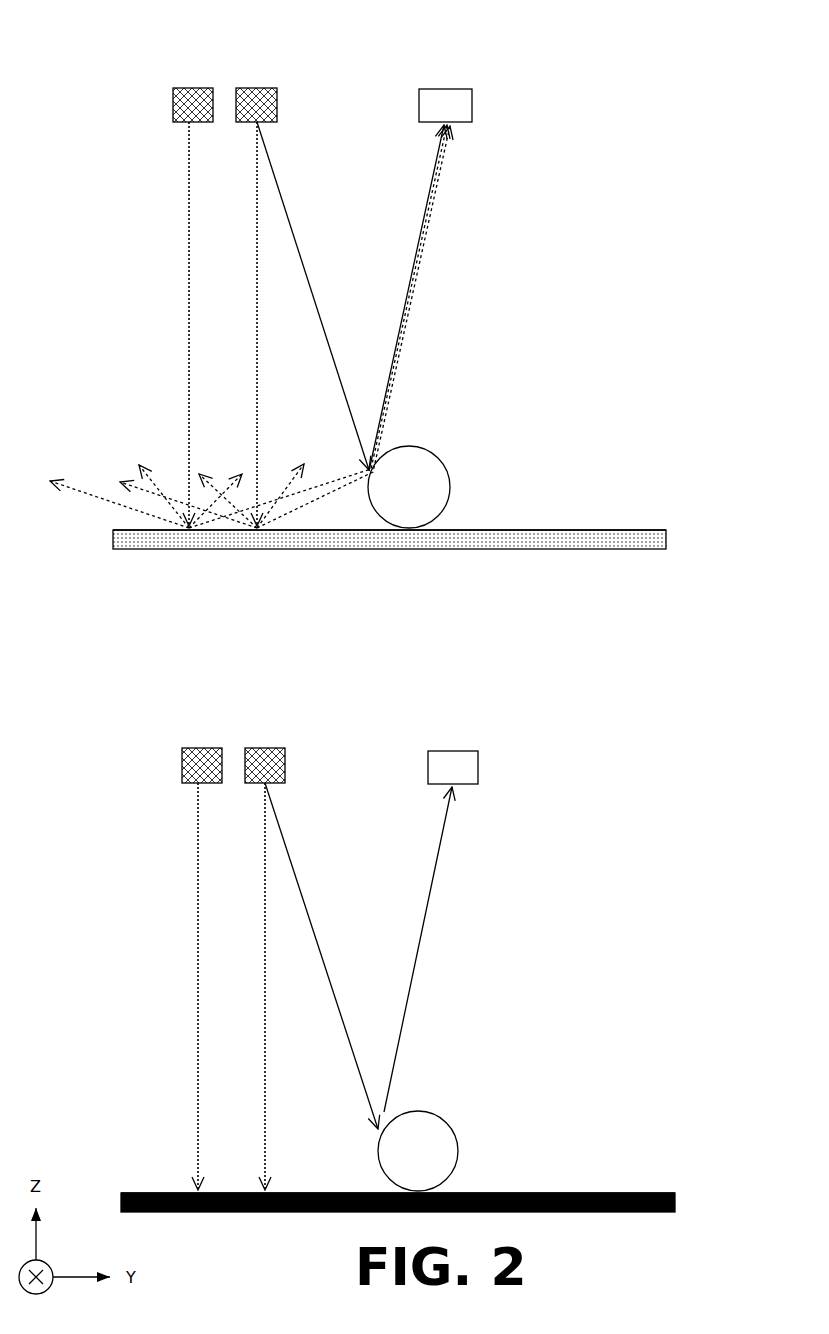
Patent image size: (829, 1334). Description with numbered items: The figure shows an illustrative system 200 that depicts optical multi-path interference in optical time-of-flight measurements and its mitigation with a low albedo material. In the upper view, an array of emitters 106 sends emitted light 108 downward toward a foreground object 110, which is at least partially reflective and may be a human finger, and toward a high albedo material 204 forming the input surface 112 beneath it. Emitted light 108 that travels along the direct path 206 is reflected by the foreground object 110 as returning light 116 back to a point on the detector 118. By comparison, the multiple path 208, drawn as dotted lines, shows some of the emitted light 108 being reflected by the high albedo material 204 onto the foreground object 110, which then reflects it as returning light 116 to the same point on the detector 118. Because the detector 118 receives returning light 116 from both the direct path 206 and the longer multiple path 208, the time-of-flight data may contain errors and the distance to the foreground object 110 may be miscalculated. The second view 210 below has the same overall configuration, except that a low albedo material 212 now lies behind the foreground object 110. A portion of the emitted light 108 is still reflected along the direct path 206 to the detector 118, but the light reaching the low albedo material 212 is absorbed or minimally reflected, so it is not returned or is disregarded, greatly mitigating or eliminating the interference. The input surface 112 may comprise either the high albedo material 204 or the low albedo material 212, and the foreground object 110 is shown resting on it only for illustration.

The system 200 is at (691, 46).
The emitters 106 is at (263, 748).
The emitted light 108 is at (166, 932).
The direct path 206 is at (427, 920).
The returning light 116 is at (452, 178).
The multiple path 208 is at (420, 257).
The foreground object 110 is at (410, 488).
The detector 118 is at (443, 107).
The high albedo material 204 is at (523, 528).
The low albedo material 212 is at (532, 1192).
The input surface 112 is at (652, 1190).
The second view 210 is at (186, 626).